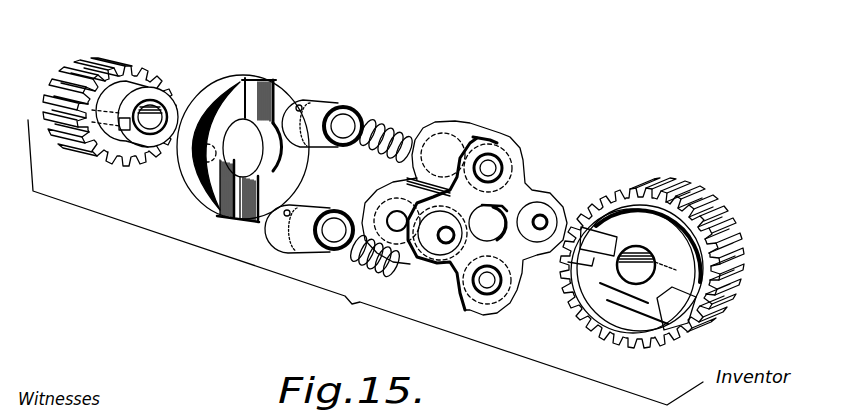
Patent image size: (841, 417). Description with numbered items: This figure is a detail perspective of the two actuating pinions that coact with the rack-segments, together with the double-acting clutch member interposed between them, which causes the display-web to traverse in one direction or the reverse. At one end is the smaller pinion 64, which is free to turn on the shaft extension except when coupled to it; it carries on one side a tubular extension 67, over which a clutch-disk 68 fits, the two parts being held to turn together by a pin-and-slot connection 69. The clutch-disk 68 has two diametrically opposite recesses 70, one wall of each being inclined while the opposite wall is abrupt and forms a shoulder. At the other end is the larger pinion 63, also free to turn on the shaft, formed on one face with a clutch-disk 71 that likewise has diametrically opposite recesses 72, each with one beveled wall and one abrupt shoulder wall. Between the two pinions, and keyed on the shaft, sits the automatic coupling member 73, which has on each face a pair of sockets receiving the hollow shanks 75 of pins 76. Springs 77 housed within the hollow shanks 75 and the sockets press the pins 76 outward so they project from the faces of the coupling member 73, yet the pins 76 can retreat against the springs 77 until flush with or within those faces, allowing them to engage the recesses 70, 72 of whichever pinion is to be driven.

The pinion 63 is at (650, 182).
The pinion 64 is at (97, 57).
The tubular extension 67 is at (130, 85).
The clutch-disk 68 is at (208, 192).
The pin-and-slot connection 69 is at (130, 117).
The recesses 70 is at (265, 80).
The clutch-disk 71 is at (608, 320).
The recesses 72 is at (592, 263).
The automatic coupling member 73 is at (462, 132).
The hollow shanks 75 is at (350, 118).
The pins 76 is at (300, 105).
The springs 77 is at (377, 153).